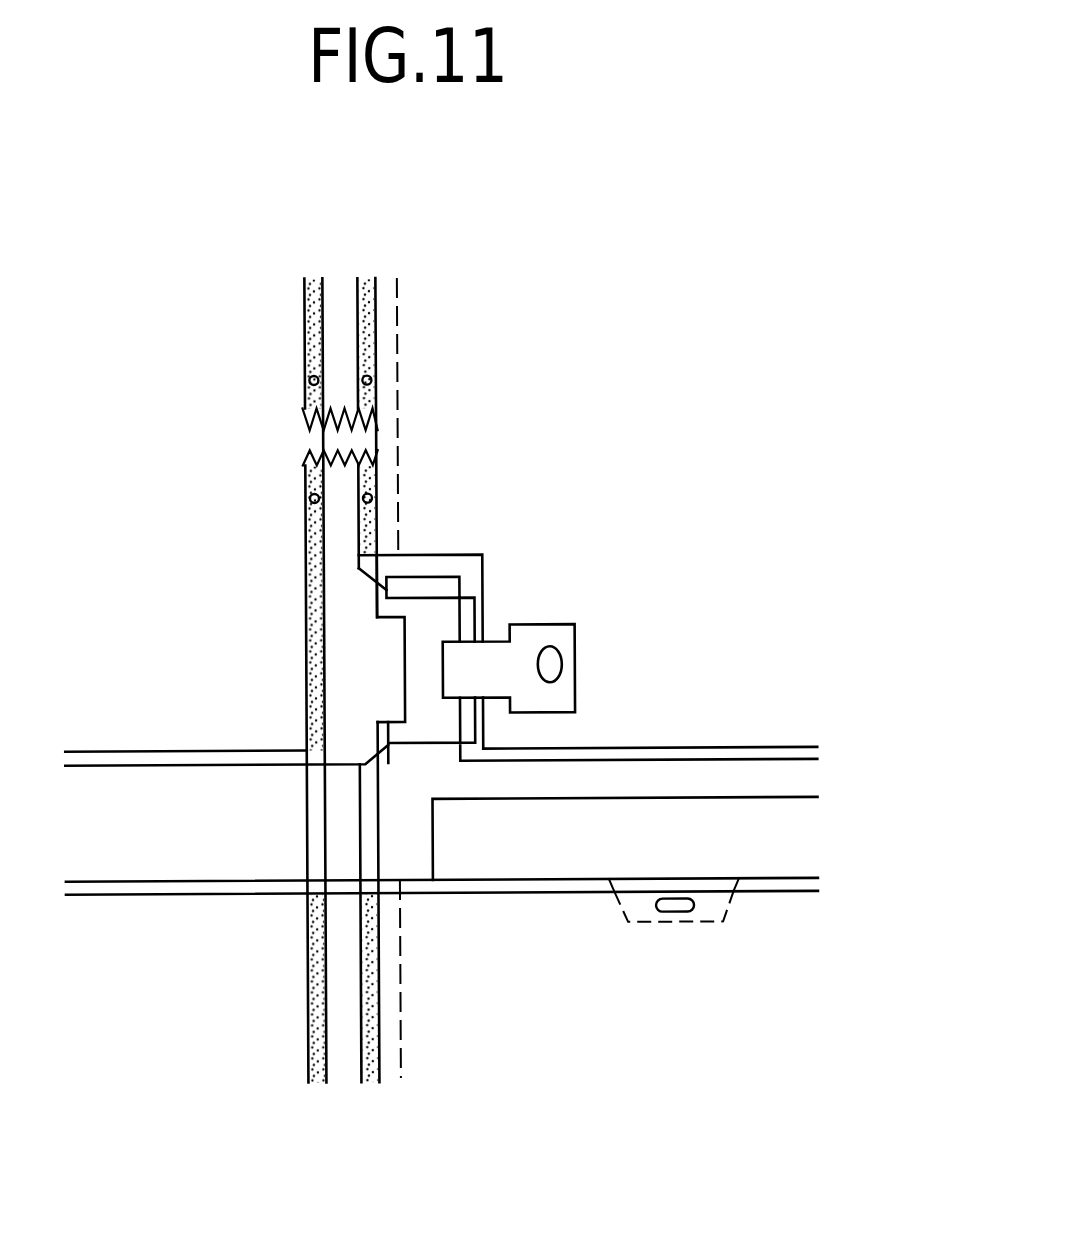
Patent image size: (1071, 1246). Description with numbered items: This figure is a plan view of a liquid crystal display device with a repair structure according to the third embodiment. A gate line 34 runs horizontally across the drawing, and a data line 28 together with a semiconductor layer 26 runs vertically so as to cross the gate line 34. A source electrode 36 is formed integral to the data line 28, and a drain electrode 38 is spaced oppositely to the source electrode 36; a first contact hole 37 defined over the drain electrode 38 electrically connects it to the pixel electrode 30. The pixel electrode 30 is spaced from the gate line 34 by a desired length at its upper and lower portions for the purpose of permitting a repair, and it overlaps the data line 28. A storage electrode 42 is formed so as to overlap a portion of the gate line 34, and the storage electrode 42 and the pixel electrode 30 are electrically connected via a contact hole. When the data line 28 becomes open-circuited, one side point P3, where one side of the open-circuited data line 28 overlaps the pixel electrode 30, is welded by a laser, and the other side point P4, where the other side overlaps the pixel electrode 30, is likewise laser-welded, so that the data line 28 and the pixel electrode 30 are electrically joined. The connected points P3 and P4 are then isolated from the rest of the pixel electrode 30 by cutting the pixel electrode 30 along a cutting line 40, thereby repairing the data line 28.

The semiconductor layer 26 is at (327, 982).
The data line 28 is at (380, 1048).
The pixel electrode 30 is at (721, 528).
The gate line 34 is at (213, 793).
The source electrode 36 is at (405, 620).
The first contact hole 37 is at (562, 665).
The drain electrode 38 is at (562, 625).
The cutting line 40 is at (398, 340).
The storage electrode 42 is at (677, 853).
The one side point P3 is at (373, 381).
The other side point P4 is at (373, 499).